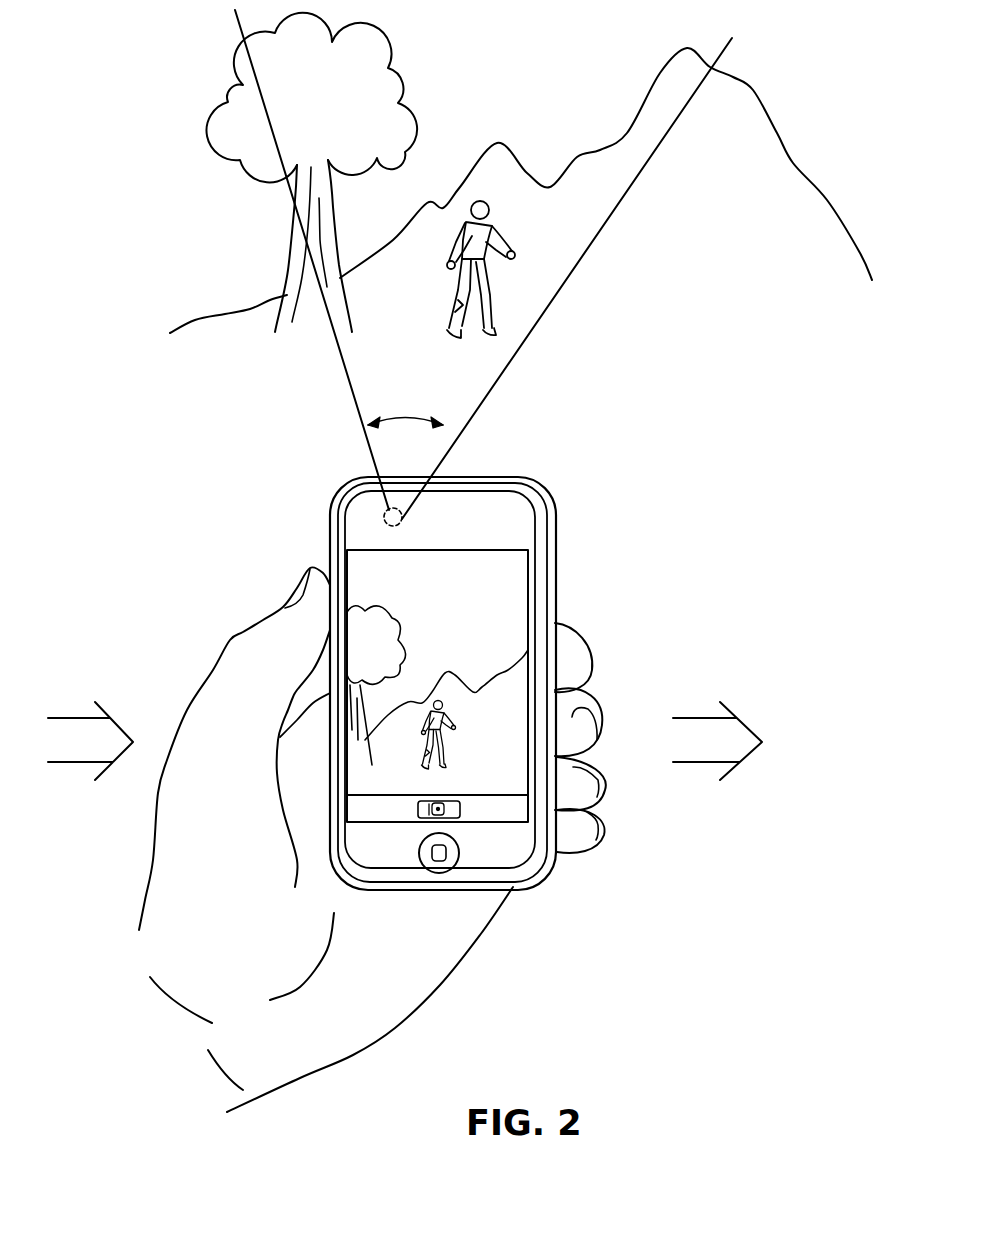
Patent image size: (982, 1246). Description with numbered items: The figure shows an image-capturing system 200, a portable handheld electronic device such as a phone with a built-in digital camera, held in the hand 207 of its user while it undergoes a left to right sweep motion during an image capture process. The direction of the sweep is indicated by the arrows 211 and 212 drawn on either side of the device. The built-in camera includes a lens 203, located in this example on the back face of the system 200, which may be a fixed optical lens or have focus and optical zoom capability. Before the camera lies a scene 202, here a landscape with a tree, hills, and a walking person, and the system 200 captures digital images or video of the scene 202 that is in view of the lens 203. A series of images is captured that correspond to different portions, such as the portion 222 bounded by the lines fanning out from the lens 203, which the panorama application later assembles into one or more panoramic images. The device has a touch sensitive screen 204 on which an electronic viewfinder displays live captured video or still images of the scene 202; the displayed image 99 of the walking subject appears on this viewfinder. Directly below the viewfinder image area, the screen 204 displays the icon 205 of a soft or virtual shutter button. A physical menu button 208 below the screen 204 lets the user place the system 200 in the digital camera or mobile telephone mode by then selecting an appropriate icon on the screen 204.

The displayed image of subject 99 is at (430, 772).
The image-capturing system 200 is at (336, 750).
The scene 202 is at (735, 380).
The lens 203 is at (385, 523).
The touch sensitive screen 204 is at (333, 773).
The shutter button icon 205 is at (418, 808).
The hand 207 is at (220, 695).
The physical menu button 208 is at (452, 859).
The arrow 211 is at (60, 757).
The arrow 212 is at (687, 755).
The portion of the scene 222 is at (403, 418).